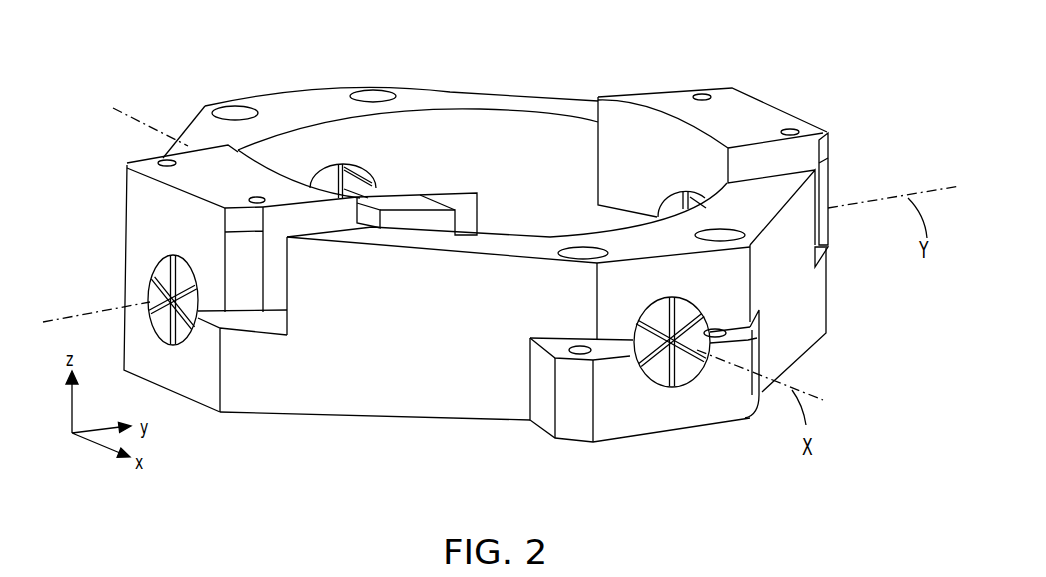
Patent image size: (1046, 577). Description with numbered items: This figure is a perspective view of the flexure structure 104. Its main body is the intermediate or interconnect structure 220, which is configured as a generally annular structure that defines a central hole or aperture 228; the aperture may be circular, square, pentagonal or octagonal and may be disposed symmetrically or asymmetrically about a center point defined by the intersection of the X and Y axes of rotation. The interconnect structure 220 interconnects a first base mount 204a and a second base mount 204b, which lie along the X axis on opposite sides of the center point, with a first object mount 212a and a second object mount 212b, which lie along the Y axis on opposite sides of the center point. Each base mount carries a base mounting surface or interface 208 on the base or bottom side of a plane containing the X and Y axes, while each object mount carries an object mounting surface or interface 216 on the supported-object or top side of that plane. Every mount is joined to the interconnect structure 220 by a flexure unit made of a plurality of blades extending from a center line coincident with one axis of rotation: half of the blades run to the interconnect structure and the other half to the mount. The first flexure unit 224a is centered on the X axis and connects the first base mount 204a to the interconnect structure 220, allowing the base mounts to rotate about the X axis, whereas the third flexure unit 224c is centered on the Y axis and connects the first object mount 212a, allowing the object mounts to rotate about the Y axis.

The flexure structure 104 is at (401, 55).
The base mounting surface 208 is at (512, 337).
The interconnect structure 220 is at (456, 150).
The central aperture 228 is at (482, 141).
The object mounting surface 216 is at (456, 127).
The first object mount 212a is at (160, 278).
The second object mount 212b is at (825, 267).
The first base mount 204a is at (643, 407).
The second base mount 204b is at (438, 140).
The first flexure unit 224a is at (670, 392).
The third flexure unit 224c is at (130, 290).